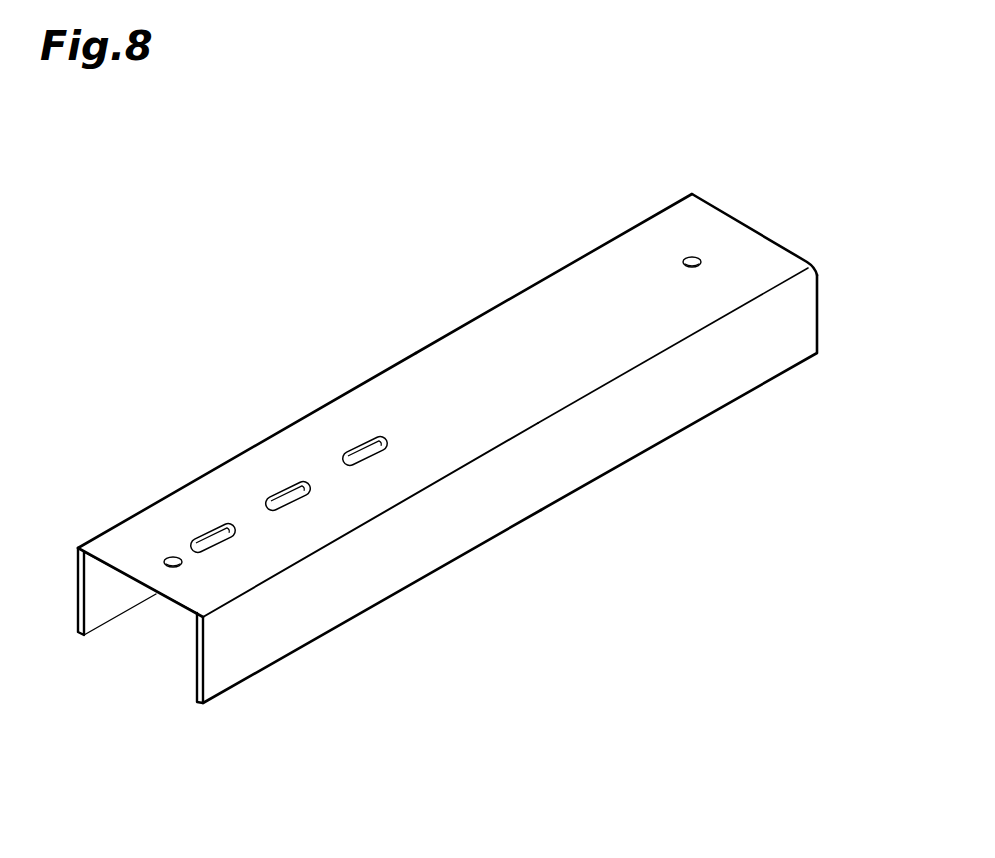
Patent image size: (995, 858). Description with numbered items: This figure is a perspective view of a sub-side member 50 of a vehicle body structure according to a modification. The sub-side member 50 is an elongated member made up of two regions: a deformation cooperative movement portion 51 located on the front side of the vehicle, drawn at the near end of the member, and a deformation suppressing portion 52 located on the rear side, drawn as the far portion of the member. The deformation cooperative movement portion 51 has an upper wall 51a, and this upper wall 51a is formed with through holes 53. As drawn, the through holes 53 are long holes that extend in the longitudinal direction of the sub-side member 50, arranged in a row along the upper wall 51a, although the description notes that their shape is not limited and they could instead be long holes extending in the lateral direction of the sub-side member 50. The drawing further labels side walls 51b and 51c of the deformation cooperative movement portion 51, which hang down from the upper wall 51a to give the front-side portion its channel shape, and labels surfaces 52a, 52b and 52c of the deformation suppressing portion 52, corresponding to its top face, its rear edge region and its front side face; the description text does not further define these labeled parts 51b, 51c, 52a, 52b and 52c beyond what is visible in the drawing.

The sub-side member 50 is at (317, 218).
The deformation cooperative movement portion 51 is at (540, 521).
The upper wall 51a is at (163, 533).
The left side wall of channel portion 51b is at (97, 607).
The right side wall of channel portion 51c is at (213, 655).
The deformation suppressing portion 52 is at (815, 362).
The top surface of extension portion 52a is at (593, 308).
The rear edge of extension portion 52b is at (522, 325).
The front side surface of extension portion 52c is at (635, 402).
The through holes 53 is at (208, 535).